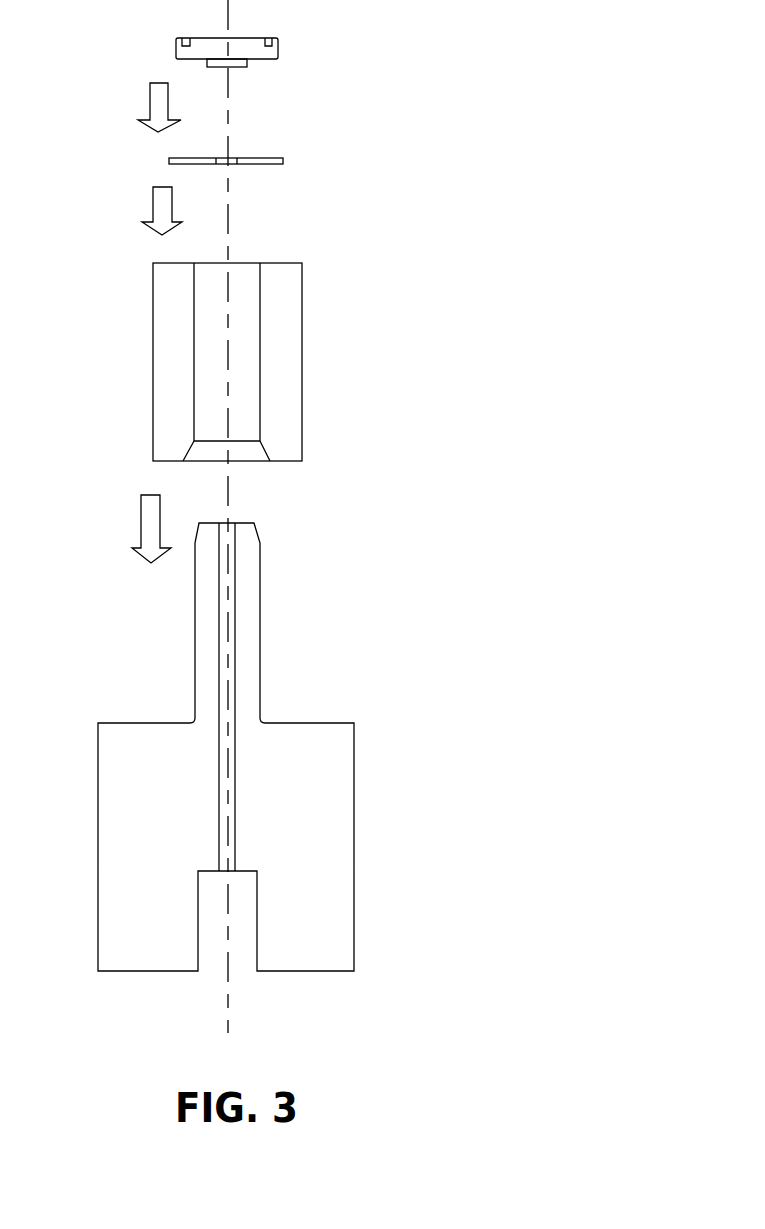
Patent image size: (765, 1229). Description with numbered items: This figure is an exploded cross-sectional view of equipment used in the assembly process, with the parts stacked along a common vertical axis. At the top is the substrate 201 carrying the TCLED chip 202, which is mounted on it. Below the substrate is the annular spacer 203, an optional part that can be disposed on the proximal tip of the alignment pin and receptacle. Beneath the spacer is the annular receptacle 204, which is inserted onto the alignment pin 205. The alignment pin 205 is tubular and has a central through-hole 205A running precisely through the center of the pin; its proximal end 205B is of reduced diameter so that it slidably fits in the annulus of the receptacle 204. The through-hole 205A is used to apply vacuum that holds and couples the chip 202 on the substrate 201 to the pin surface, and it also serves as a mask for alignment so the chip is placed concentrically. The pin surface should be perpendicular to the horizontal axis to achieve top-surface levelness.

The substrate 201 is at (250, 52).
The TCLED chip 202 is at (228, 65).
The annular spacer 203 is at (257, 162).
The annular receptacle 204 is at (279, 376).
The alignment pin 205 is at (335, 822).
The through-hole 205A is at (230, 587).
The proximal end of alignment pin 205B is at (210, 663).